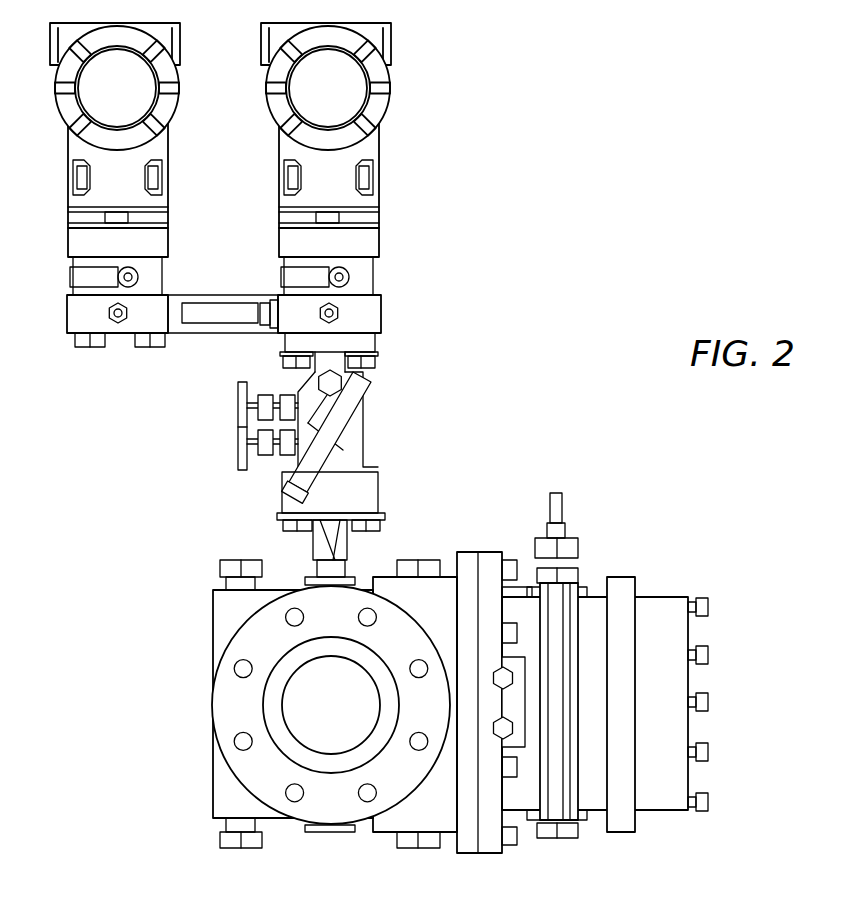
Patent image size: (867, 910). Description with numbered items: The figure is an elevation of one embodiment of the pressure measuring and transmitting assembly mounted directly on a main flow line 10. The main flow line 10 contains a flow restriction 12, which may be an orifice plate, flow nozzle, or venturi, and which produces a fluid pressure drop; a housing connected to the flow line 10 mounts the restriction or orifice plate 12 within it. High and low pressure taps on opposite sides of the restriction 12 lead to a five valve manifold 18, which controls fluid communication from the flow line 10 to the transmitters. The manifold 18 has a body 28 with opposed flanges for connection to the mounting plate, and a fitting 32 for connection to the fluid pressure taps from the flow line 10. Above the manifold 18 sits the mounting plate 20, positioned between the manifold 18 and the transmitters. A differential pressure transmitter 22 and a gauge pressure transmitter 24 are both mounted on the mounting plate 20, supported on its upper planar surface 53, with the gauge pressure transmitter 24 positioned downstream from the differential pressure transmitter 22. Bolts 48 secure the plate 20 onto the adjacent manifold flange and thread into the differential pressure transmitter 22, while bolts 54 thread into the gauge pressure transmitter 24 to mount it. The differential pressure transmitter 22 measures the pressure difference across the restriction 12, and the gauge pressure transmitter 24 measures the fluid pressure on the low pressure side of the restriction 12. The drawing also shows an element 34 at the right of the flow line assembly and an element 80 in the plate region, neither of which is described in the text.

The main flow line 10 is at (285, 705).
The flow restriction 12 is at (301, 704).
The five valve manifold 18 is at (368, 420).
The mounting plate 20 is at (246, 320).
The differential pressure transmitter 22 is at (386, 142).
The gauge pressure transmitter 24 is at (172, 142).
The body 28 is at (363, 450).
The fitting 32 is at (322, 533).
The actuator 34 is at (593, 615).
The bolts 48 is at (287, 360).
The upper planar surface 53 is at (218, 293).
The bolts 54 is at (83, 348).
The fitting 80 is at (222, 322).